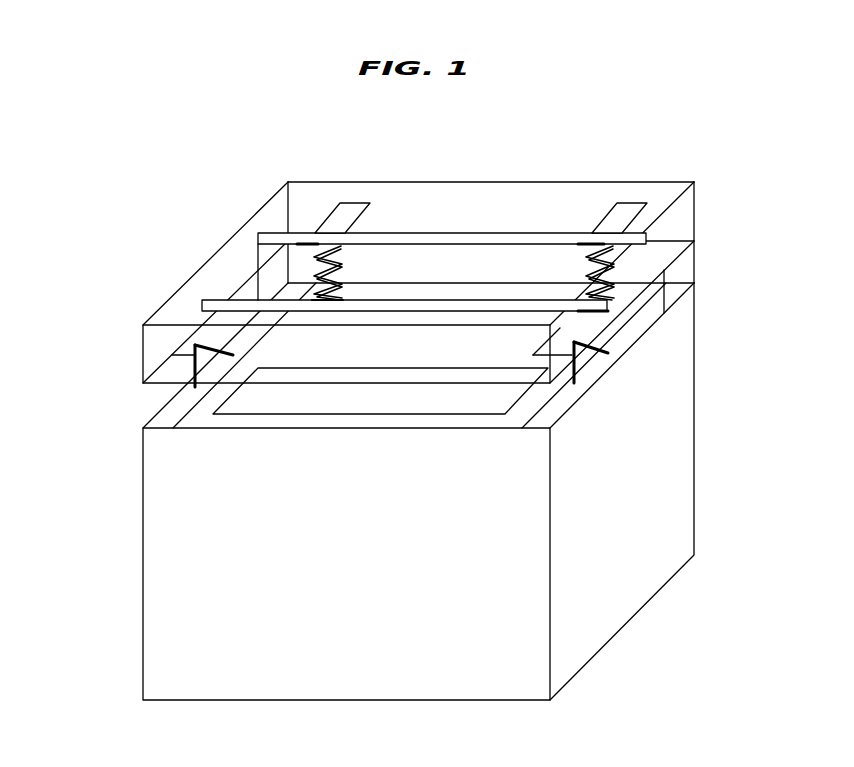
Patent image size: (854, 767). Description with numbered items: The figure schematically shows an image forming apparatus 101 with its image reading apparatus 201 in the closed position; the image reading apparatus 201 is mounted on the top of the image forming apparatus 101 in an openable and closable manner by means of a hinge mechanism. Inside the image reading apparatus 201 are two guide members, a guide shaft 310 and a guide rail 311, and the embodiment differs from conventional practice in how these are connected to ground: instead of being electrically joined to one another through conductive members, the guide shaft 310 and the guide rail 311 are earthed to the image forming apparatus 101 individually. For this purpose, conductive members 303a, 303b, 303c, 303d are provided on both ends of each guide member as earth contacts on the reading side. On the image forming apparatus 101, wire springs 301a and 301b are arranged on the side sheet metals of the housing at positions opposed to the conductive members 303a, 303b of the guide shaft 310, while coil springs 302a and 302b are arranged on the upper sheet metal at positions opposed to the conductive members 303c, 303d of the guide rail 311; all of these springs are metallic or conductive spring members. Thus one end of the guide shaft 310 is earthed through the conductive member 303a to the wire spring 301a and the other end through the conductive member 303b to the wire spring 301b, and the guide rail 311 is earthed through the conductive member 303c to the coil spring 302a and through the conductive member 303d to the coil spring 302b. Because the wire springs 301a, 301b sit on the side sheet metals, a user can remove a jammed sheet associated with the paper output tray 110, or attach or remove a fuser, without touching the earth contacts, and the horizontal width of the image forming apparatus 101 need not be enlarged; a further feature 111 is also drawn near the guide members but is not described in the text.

The image forming apparatus 101 is at (152, 526).
The paper output tray 110 is at (272, 402).
The post 111 is at (666, 276).
The image reading apparatus 201 is at (657, 182).
The wire spring 301a is at (193, 372).
The wire spring 301b is at (608, 352).
The coil spring 302a is at (312, 270).
The coil spring 302b is at (614, 262).
The conductive member 303a is at (205, 331).
The conductive member 303b is at (549, 327).
The conductive member 303c is at (350, 204).
The conductive member 303d is at (598, 228).
The guide shaft 310 is at (201, 312).
The guide rail 311 is at (277, 233).